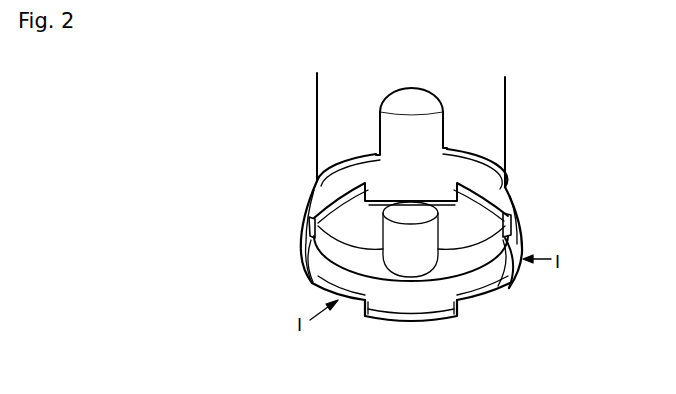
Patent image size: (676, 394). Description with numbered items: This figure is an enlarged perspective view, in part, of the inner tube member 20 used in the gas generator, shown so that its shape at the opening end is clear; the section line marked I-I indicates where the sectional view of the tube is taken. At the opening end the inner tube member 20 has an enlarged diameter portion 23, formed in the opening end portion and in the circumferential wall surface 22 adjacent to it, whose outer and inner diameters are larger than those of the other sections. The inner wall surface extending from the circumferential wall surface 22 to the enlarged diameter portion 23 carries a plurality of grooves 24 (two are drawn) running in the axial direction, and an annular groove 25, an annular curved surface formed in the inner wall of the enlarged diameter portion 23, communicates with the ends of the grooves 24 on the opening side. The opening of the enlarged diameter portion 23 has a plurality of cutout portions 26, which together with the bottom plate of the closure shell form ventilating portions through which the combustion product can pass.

The inner tube member 20 is at (508, 97).
The circumferential wall surface 22 is at (487, 150).
The enlarged diameter portion 23 is at (508, 193).
The grooves 24 is at (410, 253).
The annular groove 25 is at (467, 257).
The cutout portions 26 is at (312, 206).